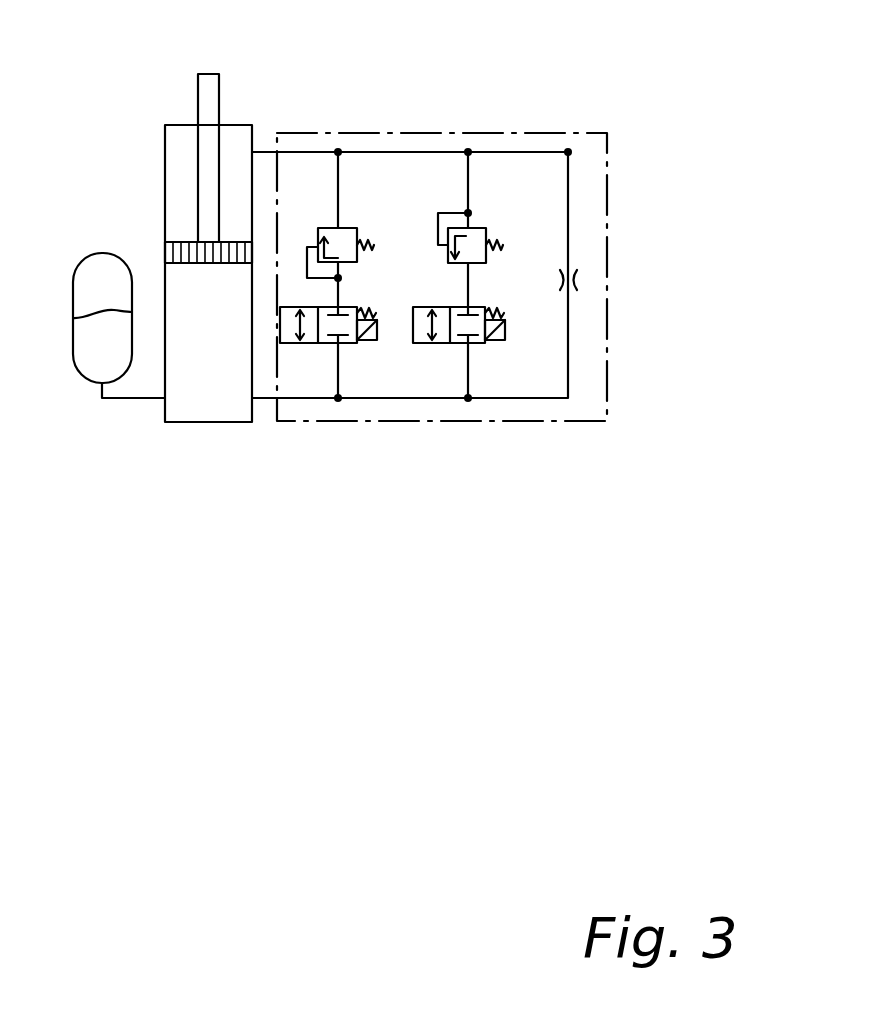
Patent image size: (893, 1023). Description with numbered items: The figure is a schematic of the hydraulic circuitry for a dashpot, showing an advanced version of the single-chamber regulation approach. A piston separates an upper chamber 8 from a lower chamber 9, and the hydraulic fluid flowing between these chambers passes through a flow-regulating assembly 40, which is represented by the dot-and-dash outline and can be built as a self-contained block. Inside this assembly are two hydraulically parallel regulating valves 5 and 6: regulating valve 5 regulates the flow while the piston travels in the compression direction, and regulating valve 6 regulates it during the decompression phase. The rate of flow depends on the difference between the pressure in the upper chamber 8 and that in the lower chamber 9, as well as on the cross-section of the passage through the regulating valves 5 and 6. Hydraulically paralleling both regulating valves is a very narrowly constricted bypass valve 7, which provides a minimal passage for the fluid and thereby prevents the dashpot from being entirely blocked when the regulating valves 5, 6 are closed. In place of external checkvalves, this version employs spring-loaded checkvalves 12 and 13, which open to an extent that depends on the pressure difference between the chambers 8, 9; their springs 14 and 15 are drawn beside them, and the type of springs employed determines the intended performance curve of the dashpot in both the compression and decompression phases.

The regulating valve 5 is at (352, 347).
The regulating valve 6 is at (480, 347).
The bypass valve 7 is at (575, 287).
The upper chamber 8 is at (233, 143).
The lower chamber 9 is at (222, 400).
The spring-loaded checkvalve 12 is at (347, 227).
The spring-loaded checkvalve 13 is at (470, 228).
The spring of first pressure limiting valve 14 is at (373, 246).
The spring of second pressure limiting valve 15 is at (502, 246).
The flow-regulating assembly 40 is at (505, 128).